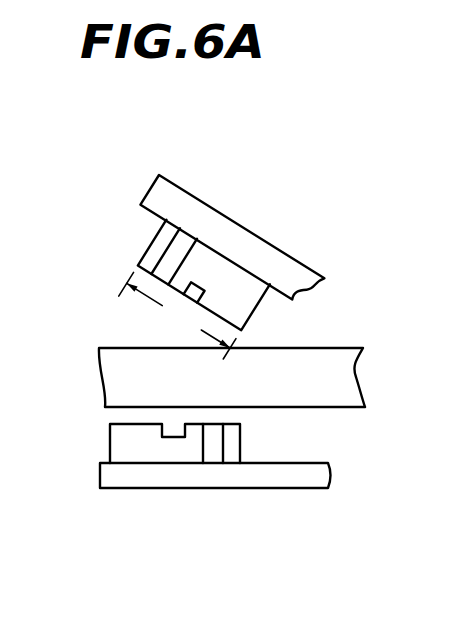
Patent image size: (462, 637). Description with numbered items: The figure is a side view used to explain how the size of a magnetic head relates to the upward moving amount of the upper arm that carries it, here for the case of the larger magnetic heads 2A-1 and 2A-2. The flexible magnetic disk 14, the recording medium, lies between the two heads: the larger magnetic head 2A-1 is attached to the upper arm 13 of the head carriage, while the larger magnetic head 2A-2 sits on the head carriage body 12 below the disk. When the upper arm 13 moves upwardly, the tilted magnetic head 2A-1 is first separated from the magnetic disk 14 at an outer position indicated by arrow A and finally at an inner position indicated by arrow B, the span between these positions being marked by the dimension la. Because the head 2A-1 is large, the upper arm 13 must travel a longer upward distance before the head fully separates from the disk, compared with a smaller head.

The upper arm 13 is at (250, 238).
The larger magnetic head 2A-1 is at (150, 240).
The arrow A is at (140, 267).
The arrow B is at (248, 329).
The length la is at (178, 316).
The magnetic disk 14 is at (358, 375).
The larger magnetic head 2A-2 is at (243, 440).
The head carriage body 12 is at (235, 483).